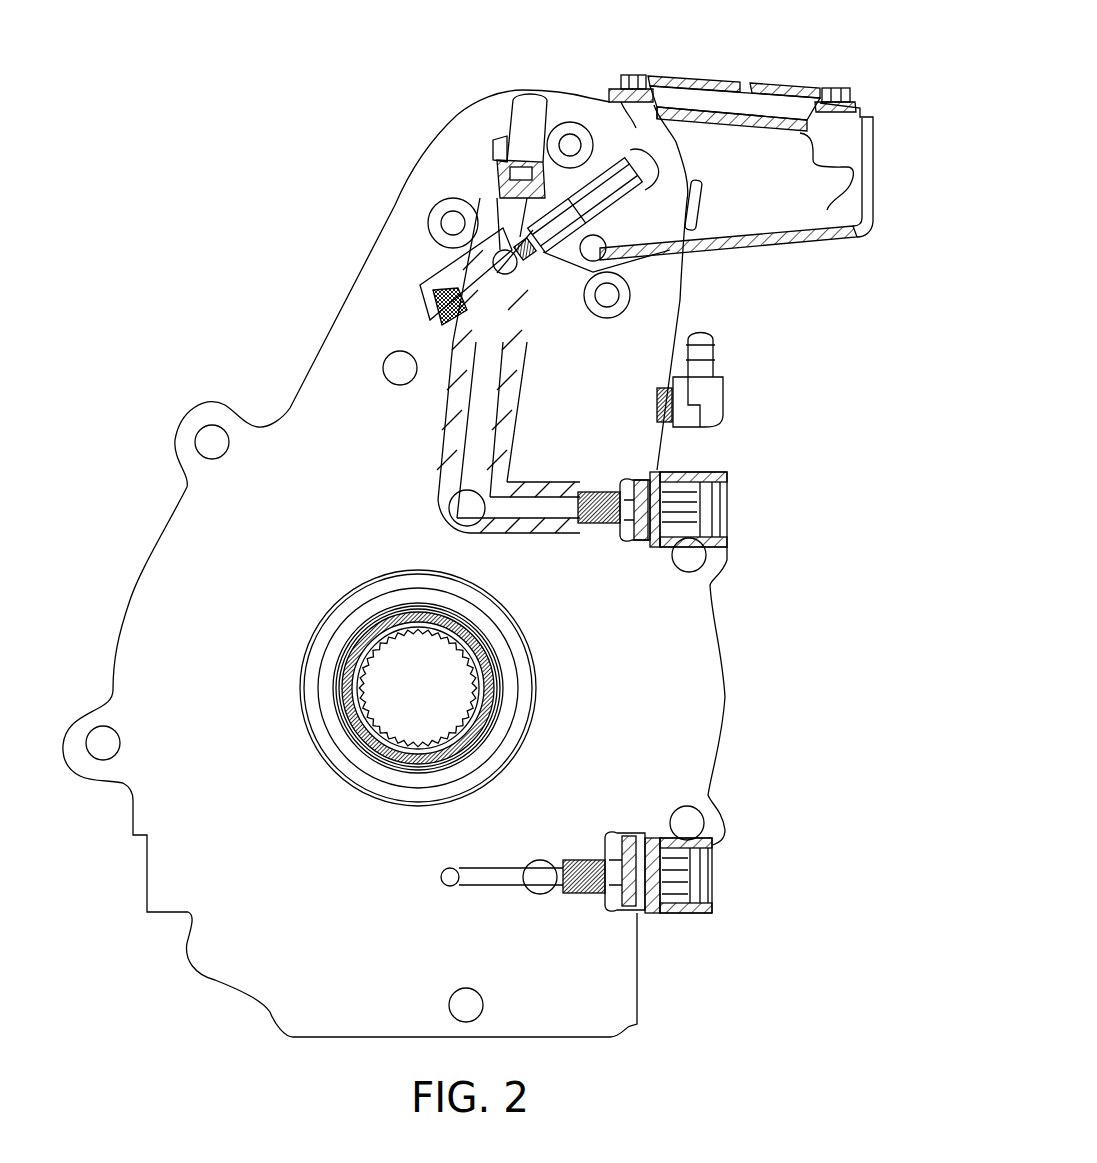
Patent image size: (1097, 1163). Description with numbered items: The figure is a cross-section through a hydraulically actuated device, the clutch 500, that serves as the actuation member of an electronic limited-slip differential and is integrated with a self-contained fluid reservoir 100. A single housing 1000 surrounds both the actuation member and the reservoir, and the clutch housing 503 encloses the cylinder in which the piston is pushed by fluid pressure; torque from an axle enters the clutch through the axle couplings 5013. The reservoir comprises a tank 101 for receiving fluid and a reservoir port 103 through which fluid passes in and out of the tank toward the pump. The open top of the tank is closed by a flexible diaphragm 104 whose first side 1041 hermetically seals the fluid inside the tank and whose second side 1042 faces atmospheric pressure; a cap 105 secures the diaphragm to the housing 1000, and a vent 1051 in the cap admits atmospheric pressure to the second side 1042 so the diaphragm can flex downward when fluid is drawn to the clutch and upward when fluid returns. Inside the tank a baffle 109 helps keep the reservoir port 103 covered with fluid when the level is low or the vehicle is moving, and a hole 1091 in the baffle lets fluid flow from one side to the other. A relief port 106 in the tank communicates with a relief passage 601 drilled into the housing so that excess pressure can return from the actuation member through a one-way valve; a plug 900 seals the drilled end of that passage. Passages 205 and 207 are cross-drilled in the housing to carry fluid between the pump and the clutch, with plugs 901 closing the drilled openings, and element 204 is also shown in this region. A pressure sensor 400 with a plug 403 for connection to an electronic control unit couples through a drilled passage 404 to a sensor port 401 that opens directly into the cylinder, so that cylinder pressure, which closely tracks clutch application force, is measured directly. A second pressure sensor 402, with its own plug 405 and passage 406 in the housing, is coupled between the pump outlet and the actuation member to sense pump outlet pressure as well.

The self-contained fluid reservoir 100 is at (900, 116).
The tank 101 is at (853, 190).
The reservoir port 103 is at (600, 240).
The diaphragm 104 is at (747, 125).
The cap 105 is at (690, 75).
The relief port 106 is at (625, 182).
The baffle 109 is at (703, 206).
The pivot pin 204 is at (493, 258).
The passage 205 is at (517, 372).
The passage 207 is at (455, 492).
The pressure sensor 400 is at (625, 905).
The sensor port 401 is at (452, 868).
The second pressure sensor 402 is at (637, 532).
The plug 403 is at (680, 915).
The drilled passage 404 is at (503, 870).
The plug 405 is at (692, 470).
The passage 406 is at (538, 495).
The clutch 500 is at (112, 552).
The clutch housing 503 is at (728, 690).
The relief passage 601 is at (540, 262).
The plug 900 is at (446, 298).
The plugs 901 is at (500, 170).
The housing 1000 is at (430, 160).
The first side 1041 is at (700, 125).
The second side 1042 is at (777, 120).
The vent 1051 is at (747, 86).
The hole 1091 is at (690, 240).
The axle couplings 5013 is at (432, 632).